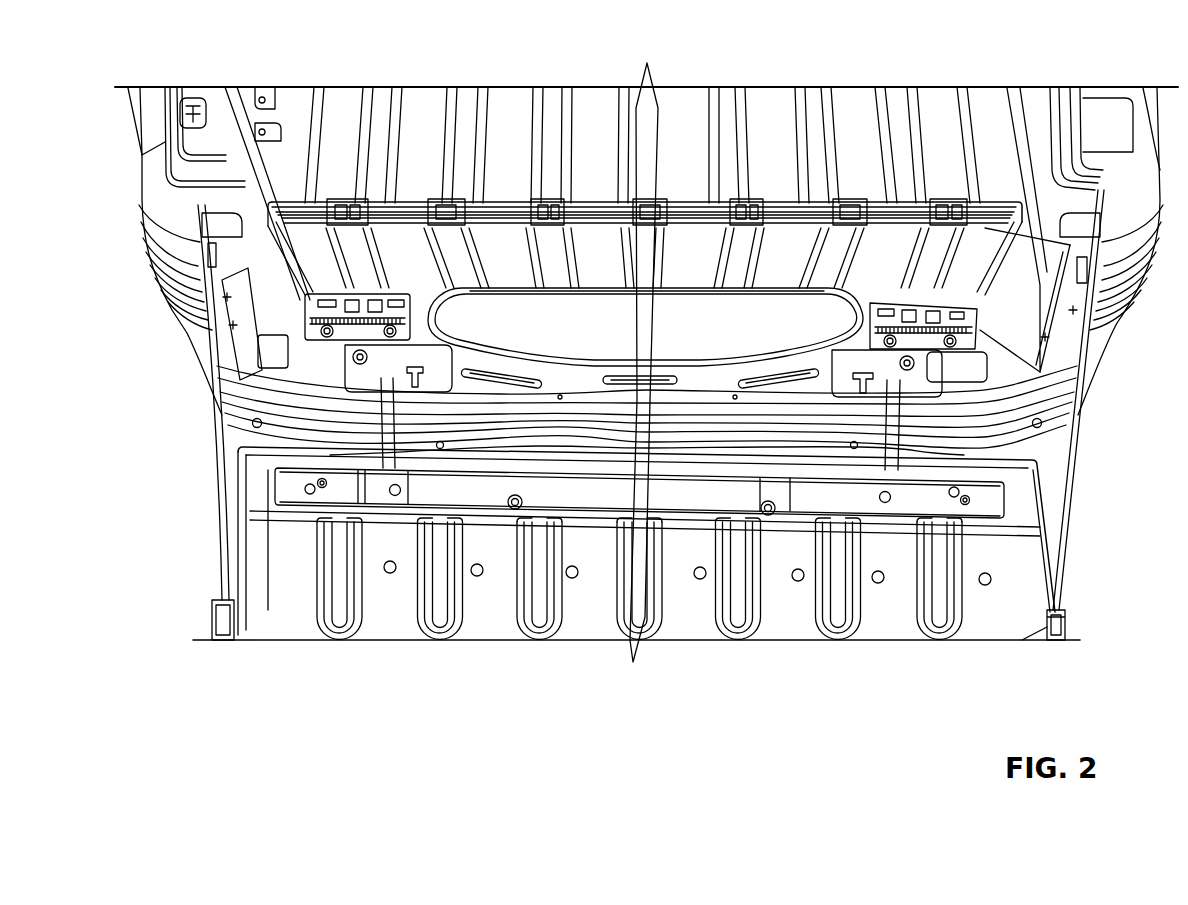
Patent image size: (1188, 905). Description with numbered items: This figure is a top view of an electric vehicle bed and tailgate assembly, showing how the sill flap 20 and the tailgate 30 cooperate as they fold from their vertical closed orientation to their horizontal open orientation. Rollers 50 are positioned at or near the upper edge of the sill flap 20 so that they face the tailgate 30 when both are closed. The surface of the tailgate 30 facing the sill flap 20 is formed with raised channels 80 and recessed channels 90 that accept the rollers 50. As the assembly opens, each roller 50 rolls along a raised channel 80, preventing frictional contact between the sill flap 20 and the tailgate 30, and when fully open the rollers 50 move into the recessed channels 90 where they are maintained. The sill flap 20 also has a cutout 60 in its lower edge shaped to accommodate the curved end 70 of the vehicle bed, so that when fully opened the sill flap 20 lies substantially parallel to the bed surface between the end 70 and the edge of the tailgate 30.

The sill flap 20 is at (397, 250).
The tailgate 30 is at (283, 612).
The rollers 50 is at (943, 212).
The cutout 60 is at (692, 300).
The curved end of the vehicle bed 70 is at (662, 362).
The raised channels 80 is at (343, 590).
The recessed channels 90 is at (237, 450).